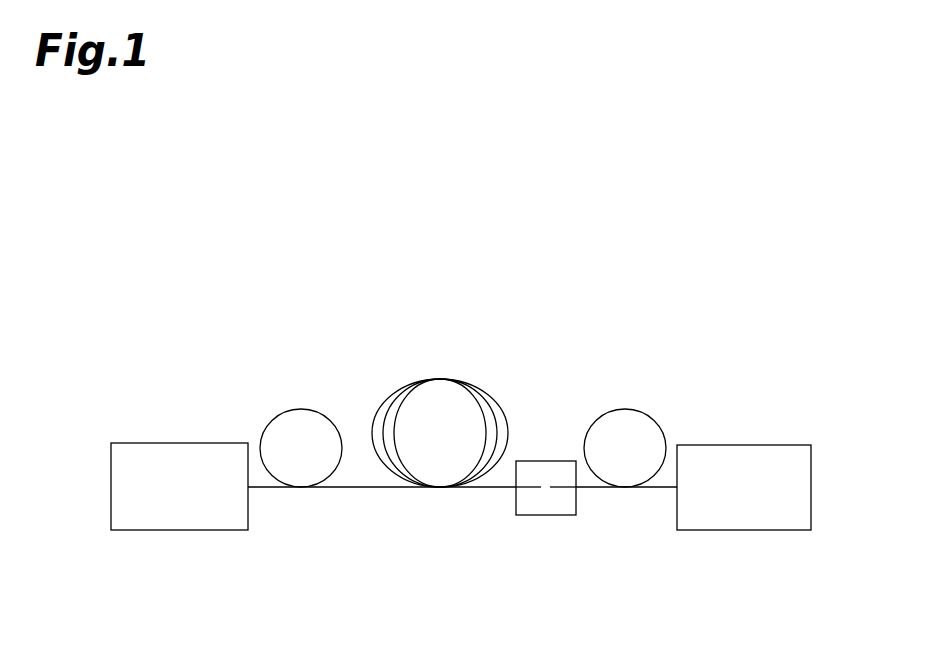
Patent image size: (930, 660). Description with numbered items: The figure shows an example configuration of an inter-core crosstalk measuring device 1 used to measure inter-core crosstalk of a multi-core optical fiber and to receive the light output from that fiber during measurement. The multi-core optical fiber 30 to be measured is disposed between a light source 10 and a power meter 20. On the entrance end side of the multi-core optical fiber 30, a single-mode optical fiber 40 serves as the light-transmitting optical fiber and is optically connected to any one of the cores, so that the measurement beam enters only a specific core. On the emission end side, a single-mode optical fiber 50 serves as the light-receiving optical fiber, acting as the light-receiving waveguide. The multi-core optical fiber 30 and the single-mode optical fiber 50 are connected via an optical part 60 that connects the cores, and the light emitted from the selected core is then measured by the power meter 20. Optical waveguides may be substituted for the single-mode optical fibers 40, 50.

The inter-core crosstalk measuring device 1 is at (642, 322).
The light source 10 is at (178, 530).
The power meter 20 is at (742, 530).
The multi-core optical fiber 30 is at (458, 380).
The single-mode optical fiber 40 is at (302, 409).
The single-mode optical fiber 50 is at (627, 409).
The optical part 60 is at (547, 461).